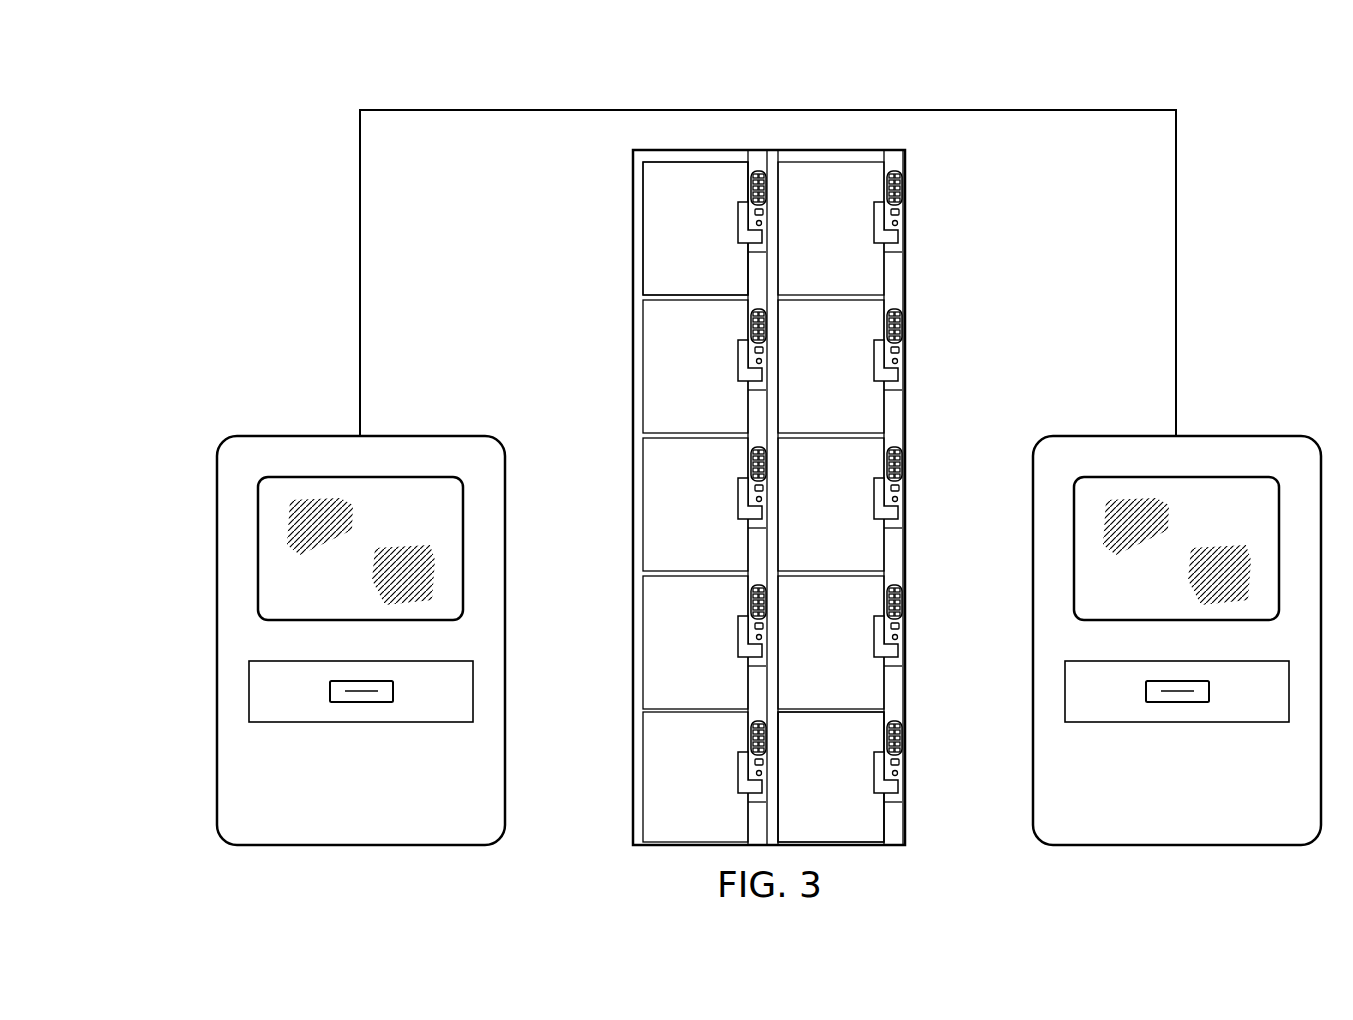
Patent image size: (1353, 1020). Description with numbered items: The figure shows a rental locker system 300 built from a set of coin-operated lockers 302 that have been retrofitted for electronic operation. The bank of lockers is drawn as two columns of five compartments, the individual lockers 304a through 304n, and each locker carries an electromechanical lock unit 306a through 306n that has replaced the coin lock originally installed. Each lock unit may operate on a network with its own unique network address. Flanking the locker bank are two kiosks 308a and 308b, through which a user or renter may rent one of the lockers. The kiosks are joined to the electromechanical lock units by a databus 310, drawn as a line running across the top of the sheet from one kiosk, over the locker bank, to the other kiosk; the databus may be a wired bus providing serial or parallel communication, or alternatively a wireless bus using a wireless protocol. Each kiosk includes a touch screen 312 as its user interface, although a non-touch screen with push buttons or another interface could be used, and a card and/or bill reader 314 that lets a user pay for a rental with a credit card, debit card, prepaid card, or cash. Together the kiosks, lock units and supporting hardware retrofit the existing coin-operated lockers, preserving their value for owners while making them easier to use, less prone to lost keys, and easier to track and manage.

The rental locker system 300 is at (270, 106).
The set of coin-operated lockers 302 is at (988, 167).
The locker 304a is at (652, 224).
The locker 304n is at (877, 813).
The electromechanical lock unit 306a is at (740, 187).
The electromechanical lock unit 306n is at (910, 758).
The kiosk 308a is at (277, 427).
The kiosk 308b is at (1258, 427).
The databus 310 is at (556, 107).
The touch screen 312 is at (257, 533).
The card and/or bill reader 314 is at (304, 730).